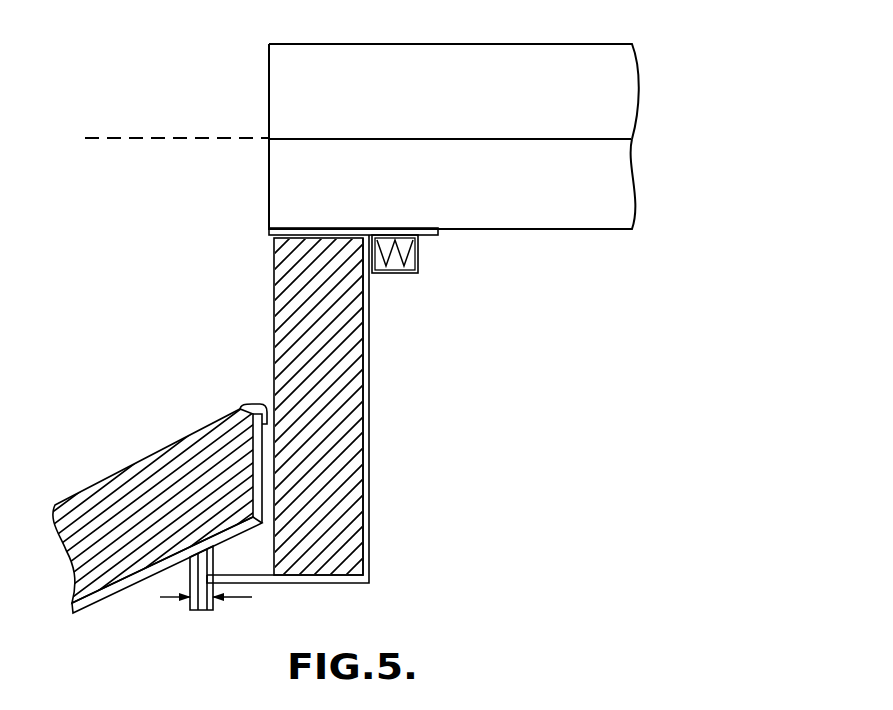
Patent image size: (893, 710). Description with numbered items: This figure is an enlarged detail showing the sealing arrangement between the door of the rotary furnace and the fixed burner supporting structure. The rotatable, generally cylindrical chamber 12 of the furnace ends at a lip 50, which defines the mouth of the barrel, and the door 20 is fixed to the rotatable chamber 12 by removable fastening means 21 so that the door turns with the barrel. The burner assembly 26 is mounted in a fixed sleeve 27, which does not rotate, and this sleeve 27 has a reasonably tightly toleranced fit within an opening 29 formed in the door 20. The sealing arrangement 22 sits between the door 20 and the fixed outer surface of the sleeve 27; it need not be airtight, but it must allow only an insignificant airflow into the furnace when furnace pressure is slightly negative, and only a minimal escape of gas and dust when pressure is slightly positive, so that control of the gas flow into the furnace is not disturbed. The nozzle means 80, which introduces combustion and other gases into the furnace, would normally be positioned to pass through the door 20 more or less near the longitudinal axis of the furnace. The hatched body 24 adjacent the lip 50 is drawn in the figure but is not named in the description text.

The nozzle means 80 is at (588, 82).
The burner assembly 26 is at (622, 198).
The opening 29 is at (258, 224).
The fixed sleeve 27 is at (430, 237).
The sealing arrangement 22 is at (398, 288).
The door 20 is at (368, 540).
The door panel 24 is at (262, 452).
The lip 50 is at (252, 407).
The chamber 12 is at (94, 606).
The removable fastening means 21 is at (197, 613).